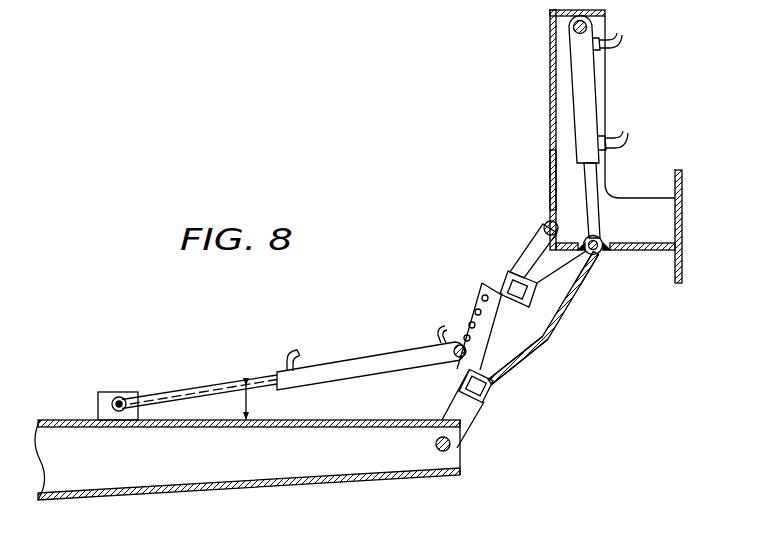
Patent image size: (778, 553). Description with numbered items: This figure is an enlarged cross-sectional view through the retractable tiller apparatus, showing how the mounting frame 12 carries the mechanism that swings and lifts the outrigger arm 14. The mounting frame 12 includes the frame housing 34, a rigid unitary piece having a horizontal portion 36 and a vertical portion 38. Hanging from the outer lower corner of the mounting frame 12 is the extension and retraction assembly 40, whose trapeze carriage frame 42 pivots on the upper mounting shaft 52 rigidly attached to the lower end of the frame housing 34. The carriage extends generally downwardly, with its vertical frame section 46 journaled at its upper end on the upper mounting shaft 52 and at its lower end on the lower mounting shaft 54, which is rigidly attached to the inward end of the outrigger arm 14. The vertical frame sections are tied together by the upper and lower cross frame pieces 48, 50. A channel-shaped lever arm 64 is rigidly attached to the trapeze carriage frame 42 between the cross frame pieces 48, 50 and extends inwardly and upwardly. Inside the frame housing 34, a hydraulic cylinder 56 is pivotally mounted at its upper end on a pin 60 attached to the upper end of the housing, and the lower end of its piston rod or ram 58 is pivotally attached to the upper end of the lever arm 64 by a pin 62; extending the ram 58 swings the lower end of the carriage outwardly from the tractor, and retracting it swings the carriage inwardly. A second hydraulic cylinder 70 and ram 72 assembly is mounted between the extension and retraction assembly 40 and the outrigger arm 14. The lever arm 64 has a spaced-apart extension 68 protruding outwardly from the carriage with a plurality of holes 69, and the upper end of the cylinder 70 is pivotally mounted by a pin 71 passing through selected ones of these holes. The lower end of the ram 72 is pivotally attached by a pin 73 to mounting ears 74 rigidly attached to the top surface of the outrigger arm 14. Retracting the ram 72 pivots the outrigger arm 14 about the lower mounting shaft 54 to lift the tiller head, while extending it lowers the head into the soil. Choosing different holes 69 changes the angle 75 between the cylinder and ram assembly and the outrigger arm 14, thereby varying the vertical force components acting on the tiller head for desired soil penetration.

The mounting frame 12 is at (624, 186).
The outrigger arm 14 is at (177, 493).
The frame housing 34 is at (548, 184).
The horizontal portion 36 is at (658, 252).
The vertical portion 38 is at (549, 113).
The extension and retraction assembly 40 is at (529, 361).
The trapeze carriage frame 42 is at (488, 400).
The vertical frame section 46 is at (527, 247).
The upper cross frame piece 48 is at (517, 270).
The lower cross frame piece 50 is at (464, 396).
The upper mounting shaft 52 is at (543, 224).
The lower mounting shaft 54 is at (451, 448).
The hydraulic cylinder 56 is at (597, 98).
The piston rod or ram 58 is at (599, 213).
The pin 60 is at (586, 27).
The pin 62 is at (584, 281).
The lever arm 64 is at (565, 313).
The extension 68 is at (481, 284).
The holes 69 is at (475, 318).
The hydraulic cylinder 70 is at (356, 358).
The pin 71 is at (448, 362).
The piston rod or ram 72 is at (208, 381).
The pin 73 is at (126, 393).
The mounting ears 74 is at (98, 403).
The angle 75 is at (249, 403).